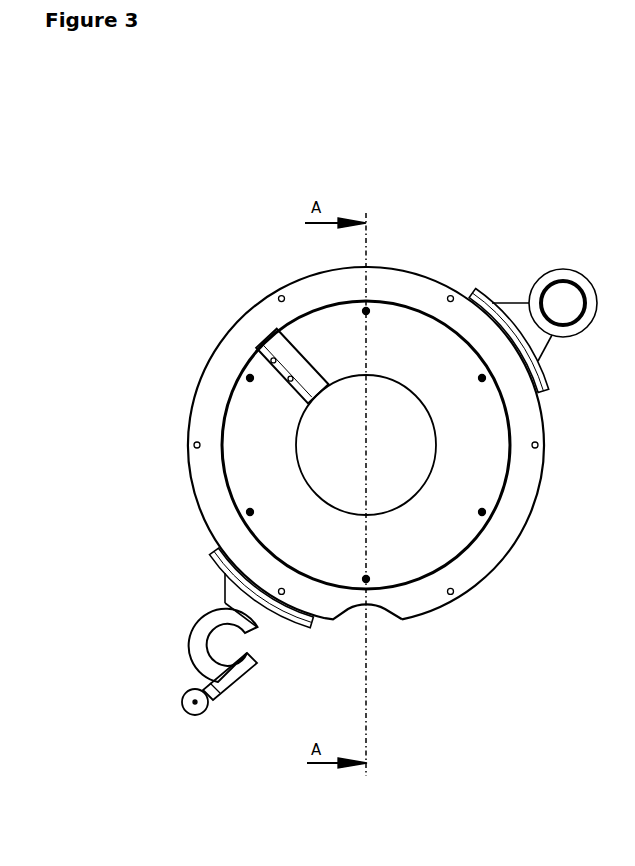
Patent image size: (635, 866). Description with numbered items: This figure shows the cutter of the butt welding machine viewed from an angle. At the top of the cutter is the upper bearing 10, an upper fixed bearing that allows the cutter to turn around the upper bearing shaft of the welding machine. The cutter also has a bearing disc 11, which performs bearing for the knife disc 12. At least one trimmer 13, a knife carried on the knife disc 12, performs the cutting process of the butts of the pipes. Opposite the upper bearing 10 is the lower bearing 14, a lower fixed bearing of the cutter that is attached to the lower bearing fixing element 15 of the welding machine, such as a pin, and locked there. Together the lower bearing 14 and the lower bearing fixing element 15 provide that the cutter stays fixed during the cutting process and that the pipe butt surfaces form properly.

The upper bearing 10 is at (553, 282).
The bearing disc 11 is at (263, 318).
The knife disc 12 is at (253, 398).
The trimmer 13 is at (282, 393).
The lower bearing 14 is at (205, 621).
The lower bearing fixing element 15 is at (193, 703).